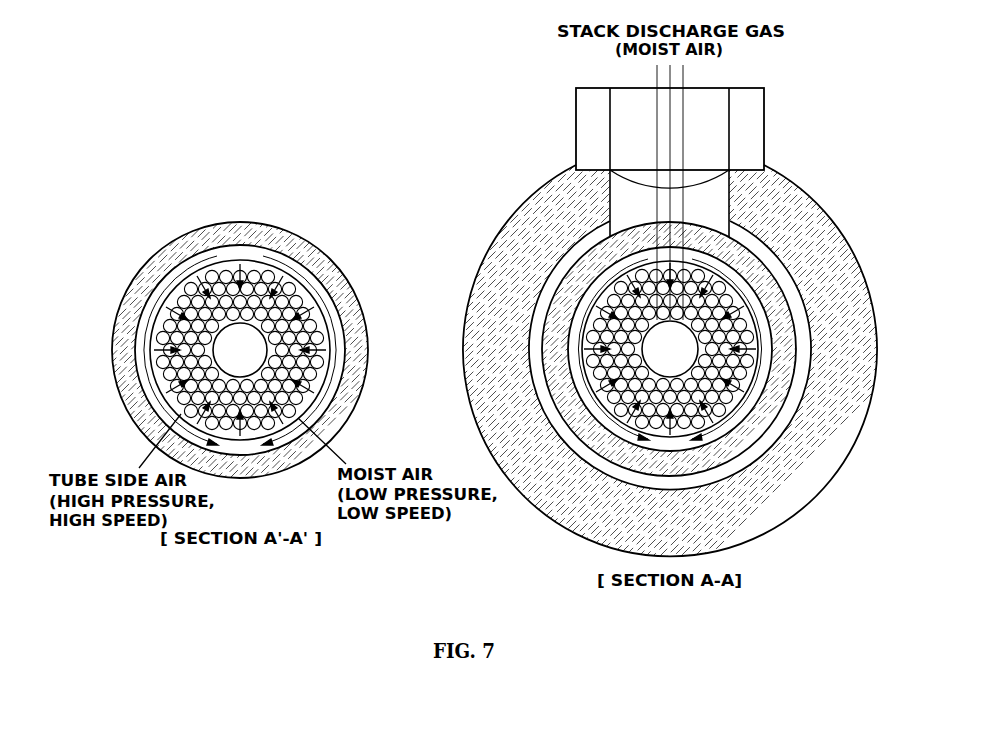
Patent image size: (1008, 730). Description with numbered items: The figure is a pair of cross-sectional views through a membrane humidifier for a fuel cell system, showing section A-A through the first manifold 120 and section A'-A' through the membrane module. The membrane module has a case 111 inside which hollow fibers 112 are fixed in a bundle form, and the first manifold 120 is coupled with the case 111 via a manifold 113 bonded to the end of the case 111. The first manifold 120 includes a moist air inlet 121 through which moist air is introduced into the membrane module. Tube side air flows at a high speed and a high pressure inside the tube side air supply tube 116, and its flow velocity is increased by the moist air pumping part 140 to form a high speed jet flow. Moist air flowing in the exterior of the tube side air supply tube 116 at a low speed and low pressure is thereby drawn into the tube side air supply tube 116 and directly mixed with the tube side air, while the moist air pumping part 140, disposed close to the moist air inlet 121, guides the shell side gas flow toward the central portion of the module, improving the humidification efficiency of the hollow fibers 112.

The case 111 is at (280, 221).
The hollow fibers 112 is at (290, 257).
The manifold 113 is at (750, 240).
The tube side air supply tube 116 is at (287, 307).
The first manifold 120 is at (557, 176).
The moist air inlet 121 is at (765, 122).
The moist air pumping part 140 is at (603, 290).